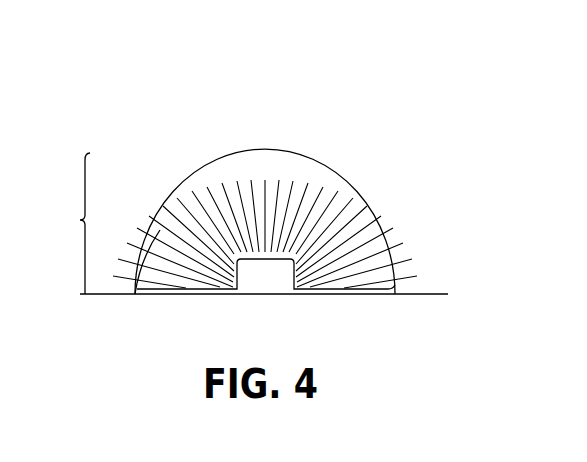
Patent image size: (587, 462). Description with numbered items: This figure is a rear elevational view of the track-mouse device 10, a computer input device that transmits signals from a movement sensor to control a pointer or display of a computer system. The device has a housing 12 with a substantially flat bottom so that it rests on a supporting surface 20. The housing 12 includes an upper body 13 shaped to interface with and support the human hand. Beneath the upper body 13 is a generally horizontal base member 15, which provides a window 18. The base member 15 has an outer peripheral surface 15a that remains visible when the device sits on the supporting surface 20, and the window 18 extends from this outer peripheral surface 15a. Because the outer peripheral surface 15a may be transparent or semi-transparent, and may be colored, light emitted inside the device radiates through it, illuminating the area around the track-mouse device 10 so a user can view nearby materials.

The track-mouse device 10 is at (293, 97).
The housing 12 is at (71, 223).
The upper body 13 is at (350, 180).
The base member 15 is at (348, 295).
The outer peripheral surface 15a is at (373, 295).
The window 18 is at (203, 198).
The supporting surface 20 is at (112, 293).